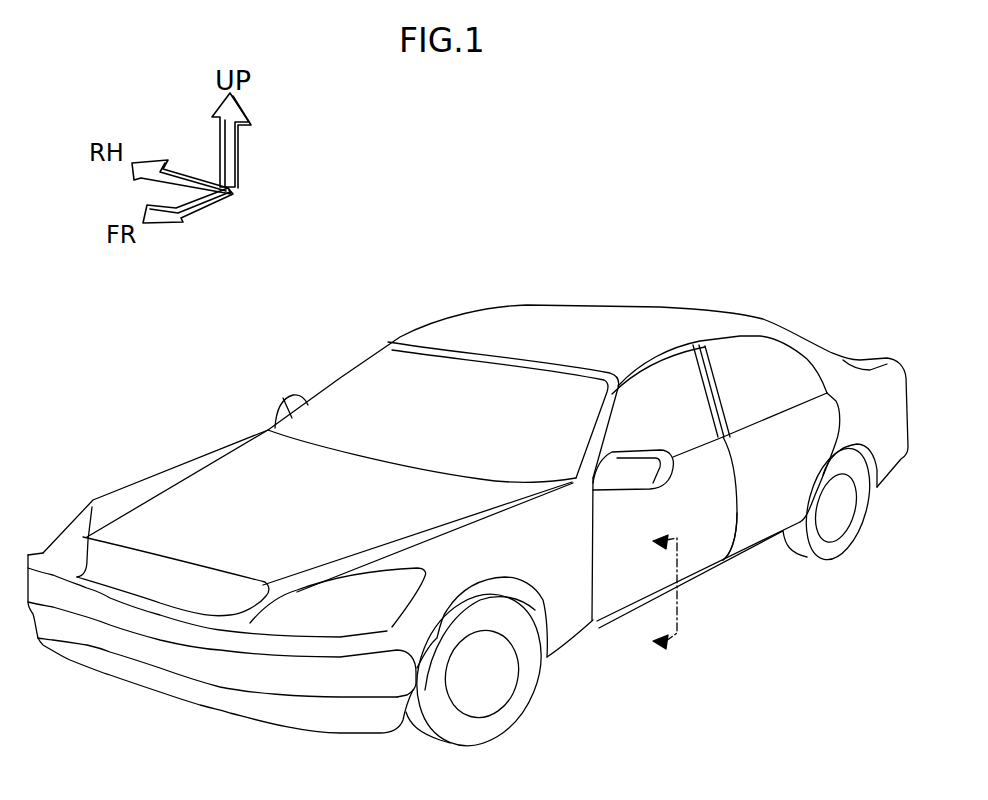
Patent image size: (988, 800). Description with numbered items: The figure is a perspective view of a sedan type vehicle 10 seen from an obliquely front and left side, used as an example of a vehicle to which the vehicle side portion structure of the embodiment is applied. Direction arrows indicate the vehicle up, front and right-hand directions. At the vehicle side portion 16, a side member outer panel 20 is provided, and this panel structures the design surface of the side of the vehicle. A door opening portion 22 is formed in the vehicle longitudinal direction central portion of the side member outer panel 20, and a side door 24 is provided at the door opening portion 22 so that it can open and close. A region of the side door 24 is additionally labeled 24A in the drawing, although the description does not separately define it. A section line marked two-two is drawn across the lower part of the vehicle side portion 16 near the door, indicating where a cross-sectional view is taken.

The vehicle 10 is at (157, 387).
The vehicle side portion 16 is at (712, 572).
The side member outer panel 20 is at (567, 607).
The door opening portion 22 is at (594, 597).
The side door 24 is at (731, 503).
The lower front portion of rear side door 24A is at (712, 552).